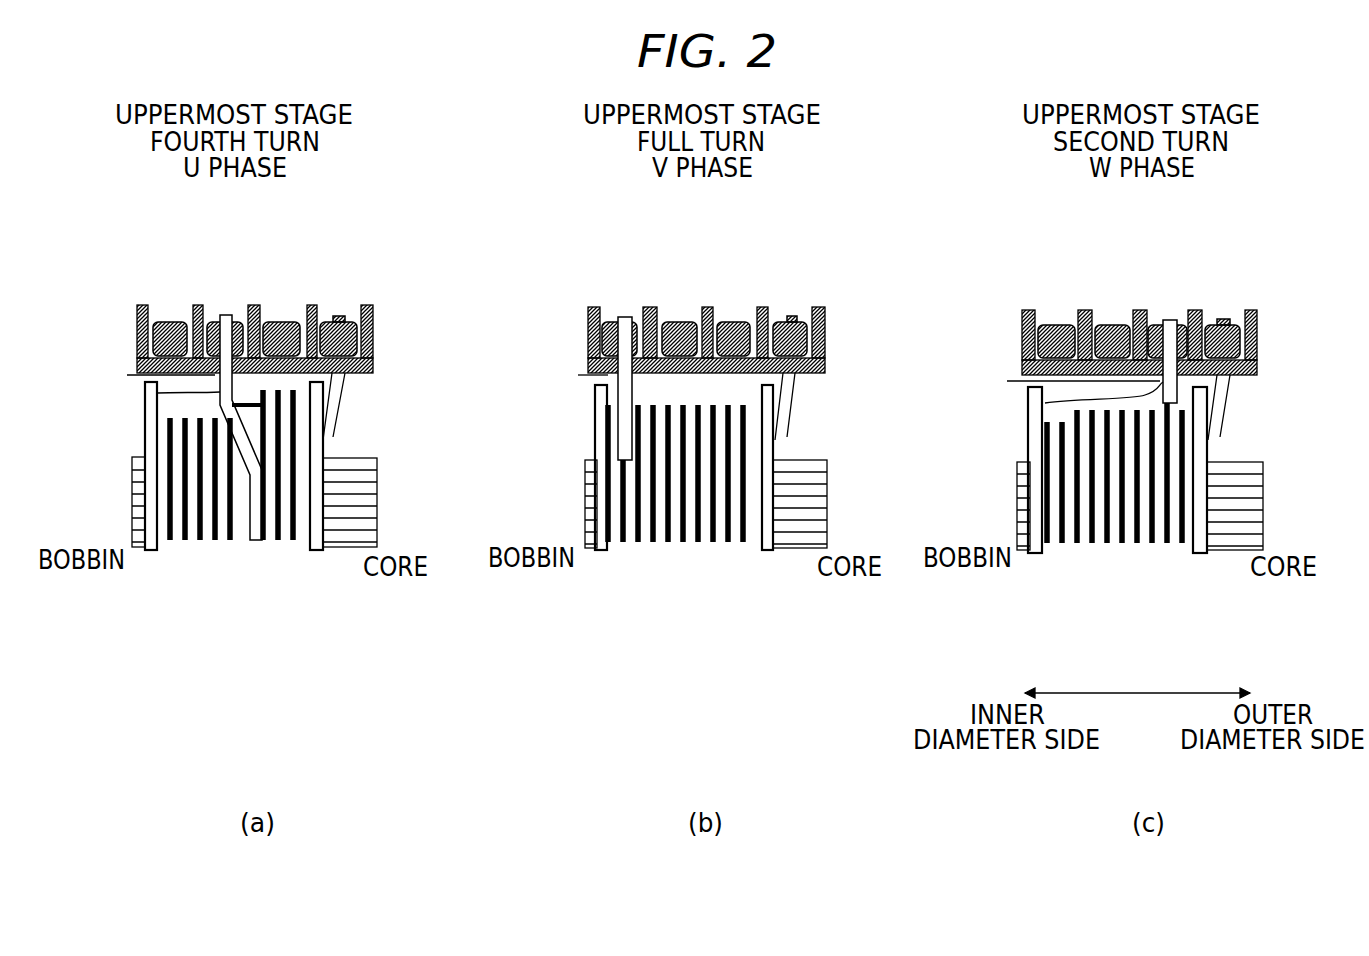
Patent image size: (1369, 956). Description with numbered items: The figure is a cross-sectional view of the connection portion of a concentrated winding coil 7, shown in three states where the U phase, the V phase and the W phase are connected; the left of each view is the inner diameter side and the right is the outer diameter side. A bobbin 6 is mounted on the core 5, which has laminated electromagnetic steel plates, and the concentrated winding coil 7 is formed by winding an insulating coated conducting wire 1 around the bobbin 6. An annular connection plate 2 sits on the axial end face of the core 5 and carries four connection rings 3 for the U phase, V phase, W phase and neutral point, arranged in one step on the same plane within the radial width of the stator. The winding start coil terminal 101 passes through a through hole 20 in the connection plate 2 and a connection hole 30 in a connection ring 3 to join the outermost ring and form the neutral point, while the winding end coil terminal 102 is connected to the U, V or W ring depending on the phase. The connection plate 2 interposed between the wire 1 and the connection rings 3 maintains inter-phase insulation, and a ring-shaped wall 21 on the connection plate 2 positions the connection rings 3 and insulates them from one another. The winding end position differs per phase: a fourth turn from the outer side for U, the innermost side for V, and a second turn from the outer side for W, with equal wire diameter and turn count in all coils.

The insulating coated conducting wire 1 is at (240, 537).
The connection plate 2 is at (340, 372).
The connection ring 3 is at (170, 322).
The core 5 is at (370, 497).
The bobbin 6 is at (150, 487).
The concentrated winding coil 7 is at (278, 581).
The through hole 20 is at (626, 383).
The ring-shaped wall 21 is at (270, 318).
The connection hole 30 is at (233, 315).
The winding start coil terminal 101 is at (327, 410).
The winding end coil terminal 102 is at (141, 396).